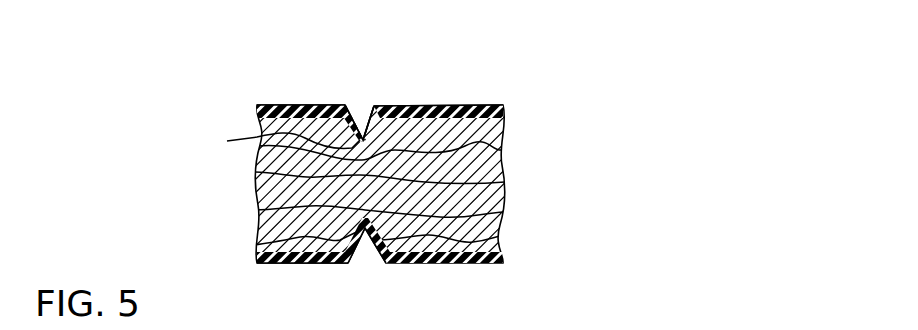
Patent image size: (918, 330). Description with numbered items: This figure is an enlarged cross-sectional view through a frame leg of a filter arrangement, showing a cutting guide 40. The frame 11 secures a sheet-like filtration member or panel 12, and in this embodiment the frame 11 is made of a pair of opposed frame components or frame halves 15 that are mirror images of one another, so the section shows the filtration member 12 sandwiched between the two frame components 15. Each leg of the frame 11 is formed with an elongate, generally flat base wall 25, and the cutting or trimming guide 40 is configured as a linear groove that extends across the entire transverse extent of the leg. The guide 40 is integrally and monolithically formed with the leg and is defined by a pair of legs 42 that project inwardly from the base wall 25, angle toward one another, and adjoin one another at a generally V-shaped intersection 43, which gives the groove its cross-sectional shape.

The frame 11 is at (427, 103).
The filtration member 12 is at (505, 198).
The frame component 15 is at (287, 104).
The base wall 25 is at (490, 107).
The cutting guide 40 is at (378, 89).
The leg 42 is at (357, 107).
The V-shaped intersection 43 is at (278, 143).